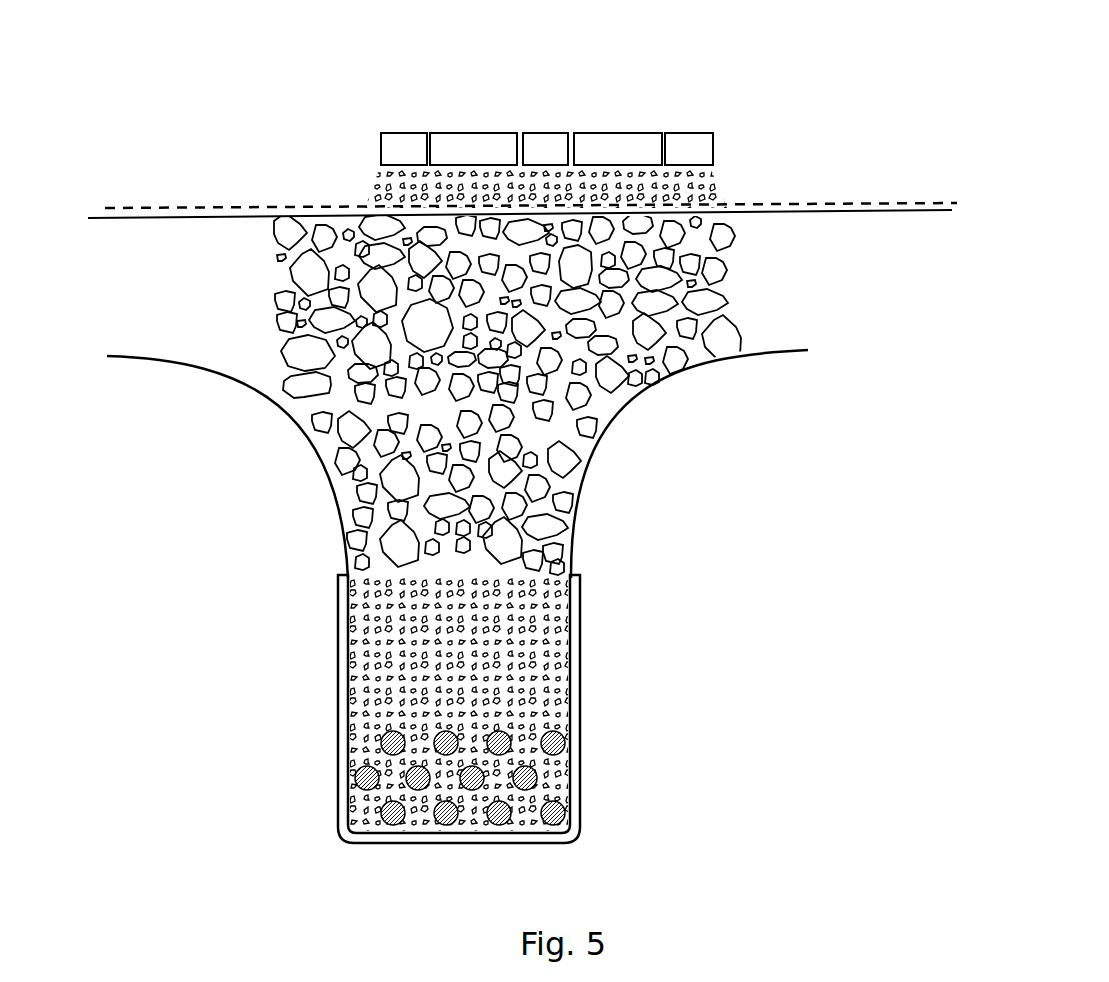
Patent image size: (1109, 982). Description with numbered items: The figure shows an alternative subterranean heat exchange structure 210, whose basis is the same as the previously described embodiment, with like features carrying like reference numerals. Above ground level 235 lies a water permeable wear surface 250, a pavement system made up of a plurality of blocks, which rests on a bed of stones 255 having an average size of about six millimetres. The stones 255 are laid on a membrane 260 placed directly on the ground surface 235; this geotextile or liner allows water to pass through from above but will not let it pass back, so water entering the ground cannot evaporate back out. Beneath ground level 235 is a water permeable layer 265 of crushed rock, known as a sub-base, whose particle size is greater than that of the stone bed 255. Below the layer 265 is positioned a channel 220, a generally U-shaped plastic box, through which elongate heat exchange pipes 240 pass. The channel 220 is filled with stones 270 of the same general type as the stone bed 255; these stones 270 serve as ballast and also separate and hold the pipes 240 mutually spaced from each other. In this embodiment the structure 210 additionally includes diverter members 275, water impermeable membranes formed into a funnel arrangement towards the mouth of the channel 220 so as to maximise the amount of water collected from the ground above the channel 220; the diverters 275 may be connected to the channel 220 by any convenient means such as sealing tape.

The heat exchange structure 210 is at (704, 90).
The channel 220 is at (338, 705).
The ground level 235 is at (94, 217).
The heat exchange pipes 240 is at (567, 813).
The water permeable wear surface 250 is at (415, 133).
The bed of stones 255 is at (372, 182).
The membrane 260 is at (298, 208).
The water permeable layer of crushed rock 265 is at (282, 367).
The stones 270 is at (348, 640).
The diverter members 275 is at (167, 356).